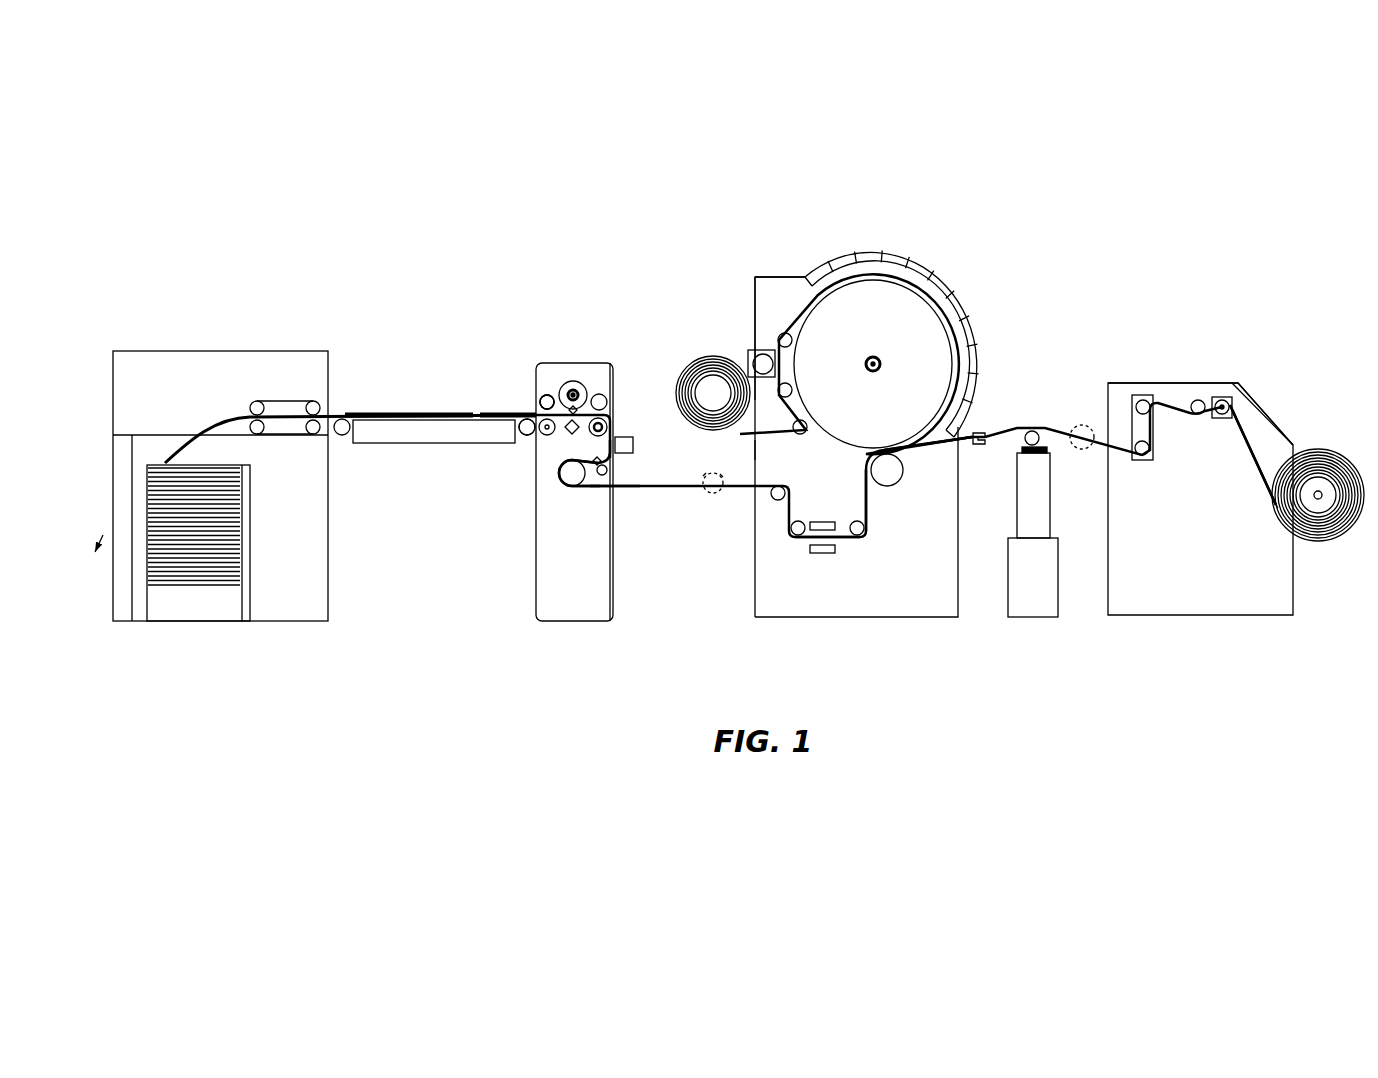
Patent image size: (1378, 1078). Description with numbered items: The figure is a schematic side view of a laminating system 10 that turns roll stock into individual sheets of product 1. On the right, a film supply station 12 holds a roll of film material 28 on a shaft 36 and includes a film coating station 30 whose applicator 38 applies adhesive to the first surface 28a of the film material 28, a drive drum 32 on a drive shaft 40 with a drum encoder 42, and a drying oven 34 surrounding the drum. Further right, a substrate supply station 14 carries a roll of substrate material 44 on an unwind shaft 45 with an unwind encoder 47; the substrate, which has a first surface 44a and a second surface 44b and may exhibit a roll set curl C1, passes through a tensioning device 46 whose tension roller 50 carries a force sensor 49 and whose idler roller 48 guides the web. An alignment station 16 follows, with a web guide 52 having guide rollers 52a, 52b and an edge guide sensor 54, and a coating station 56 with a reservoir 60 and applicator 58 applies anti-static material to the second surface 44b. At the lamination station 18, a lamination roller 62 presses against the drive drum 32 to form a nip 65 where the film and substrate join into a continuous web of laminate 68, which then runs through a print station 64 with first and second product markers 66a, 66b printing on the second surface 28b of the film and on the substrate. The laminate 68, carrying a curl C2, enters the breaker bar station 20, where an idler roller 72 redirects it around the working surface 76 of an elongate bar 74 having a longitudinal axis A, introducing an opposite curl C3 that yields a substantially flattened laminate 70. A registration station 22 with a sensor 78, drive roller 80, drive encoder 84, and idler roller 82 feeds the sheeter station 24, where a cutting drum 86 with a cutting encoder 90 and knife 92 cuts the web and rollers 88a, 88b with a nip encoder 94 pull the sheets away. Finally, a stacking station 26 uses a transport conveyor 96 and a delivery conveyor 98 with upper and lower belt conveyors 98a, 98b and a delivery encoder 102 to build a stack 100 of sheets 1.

The laminating system 10 is at (982, 148).
The film supply station 12 is at (737, 302).
The substrate supply station 14 is at (1243, 363).
The alignment station 16 is at (1075, 527).
The lamination station 18 is at (877, 567).
The breaker bar station 20 is at (608, 485).
The registration station 22 is at (622, 410).
The sheeter station 24 is at (552, 335).
The stacking station 26 is at (230, 382).
The roll of film material 28 is at (704, 378).
The first surface of the film material 28a is at (768, 438).
The second surface of the film material 28b is at (764, 443).
The film coating station 30 is at (760, 350).
The drive drum 32 is at (912, 322).
The drying oven 34 is at (968, 310).
The shaft 36 is at (714, 393).
The applicator 38 is at (767, 360).
The drive shaft 40 is at (872, 358).
The drum encoder 42 is at (880, 364).
The roll of substrate material 44 is at (1347, 540).
The first surface of the substrate material 44a is at (1250, 438).
The second surface of the substrate material 44b is at (1252, 458).
The unwind shaft 45 is at (1320, 492).
The tensioning device 46 is at (1221, 418).
The unwind encoder 47 is at (1318, 499).
The idler roller 48 is at (1193, 403).
The force sensor 49 is at (1233, 397).
The tension roller 50 is at (1221, 400).
The web guide 52 is at (1133, 395).
The guide roller 52a is at (1152, 415).
The guide roller 52b is at (1133, 440).
The edge guide sensor 54 is at (977, 450).
The coating station 56 is at (1043, 598).
The applicator 58 is at (1032, 431).
The reservoir 60 is at (1022, 447).
The lamination roller 62 is at (887, 474).
The print station 64 is at (807, 558).
The nip 65 is at (900, 452).
The first product marker 66a is at (815, 522).
The second product marker 66b is at (824, 553).
The continuous web of laminate 68 is at (862, 497).
The substantially flattened laminate 70 is at (592, 433).
The idler roller 72 is at (572, 478).
The elongate bar 74 is at (600, 455).
The working surface 76 is at (608, 470).
The sensor 78 is at (630, 437).
The drive roller 80 is at (613, 412).
The idler roller 82 is at (601, 394).
The drive encoder 84 is at (545, 434).
The cutting drum 86 is at (575, 381).
The roller 88a is at (544, 396).
The roller 88b is at (525, 436).
The cutting encoder 90 is at (568, 393).
The knife 92 is at (578, 405).
The nip encoder 94 is at (541, 400).
The transport conveyor 96 is at (372, 412).
The delivery conveyor 98 is at (275, 392).
The upper belt conveyor 98a is at (313, 401).
The lower belt conveyor 98b is at (300, 433).
The stack 100 is at (243, 575).
The delivery encoder 102 is at (257, 402).
The individual sheets of product 1 is at (210, 422).
The longitudinal axis A is at (597, 470).
The curl C1 is at (1084, 452).
The curl C2 is at (708, 493).
The curl C3 is at (600, 570).